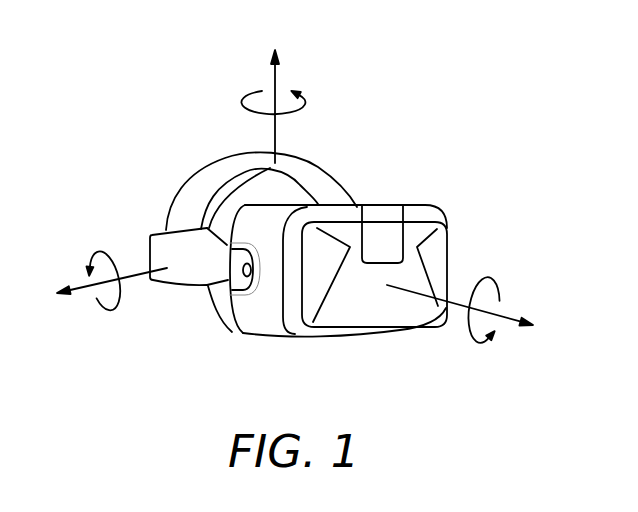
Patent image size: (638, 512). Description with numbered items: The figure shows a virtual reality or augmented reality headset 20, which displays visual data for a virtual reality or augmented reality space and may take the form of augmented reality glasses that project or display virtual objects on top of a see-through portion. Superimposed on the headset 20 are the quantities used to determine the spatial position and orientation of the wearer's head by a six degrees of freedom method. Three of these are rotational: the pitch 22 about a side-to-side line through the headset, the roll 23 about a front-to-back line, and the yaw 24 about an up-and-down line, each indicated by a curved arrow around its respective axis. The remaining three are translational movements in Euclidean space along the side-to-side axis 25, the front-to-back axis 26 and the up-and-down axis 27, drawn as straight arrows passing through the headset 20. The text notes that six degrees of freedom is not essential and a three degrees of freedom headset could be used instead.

The virtual reality or augmented reality headset 20 is at (367, 337).
The pitch 22 is at (112, 311).
The roll 23 is at (500, 298).
The yaw 24 is at (258, 91).
The side-to-side axis 25 is at (132, 277).
The front-to-back axis 26 is at (458, 307).
The up-and-down axis 27 is at (276, 132).